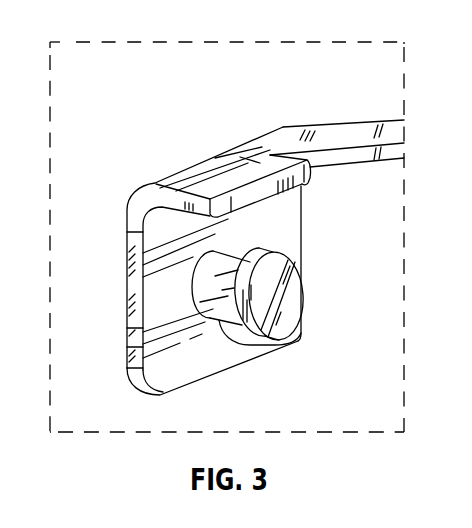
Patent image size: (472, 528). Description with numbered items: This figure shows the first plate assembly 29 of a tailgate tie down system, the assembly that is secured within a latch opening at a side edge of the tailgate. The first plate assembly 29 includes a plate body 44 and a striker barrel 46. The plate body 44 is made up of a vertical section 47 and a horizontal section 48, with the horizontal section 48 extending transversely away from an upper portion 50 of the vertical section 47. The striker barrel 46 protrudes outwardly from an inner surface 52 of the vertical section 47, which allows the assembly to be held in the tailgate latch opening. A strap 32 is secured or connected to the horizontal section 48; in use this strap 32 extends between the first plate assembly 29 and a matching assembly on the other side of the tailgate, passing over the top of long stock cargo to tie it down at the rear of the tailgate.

The first plate assembly 29 is at (279, 53).
The strap 32 is at (331, 129).
The plate body 44 is at (180, 271).
The striker barrel 46 is at (222, 331).
The vertical section 47 is at (149, 312).
The horizontal section 48 is at (211, 171).
The upper portion 50 is at (288, 212).
The inner surface 52 is at (203, 377).